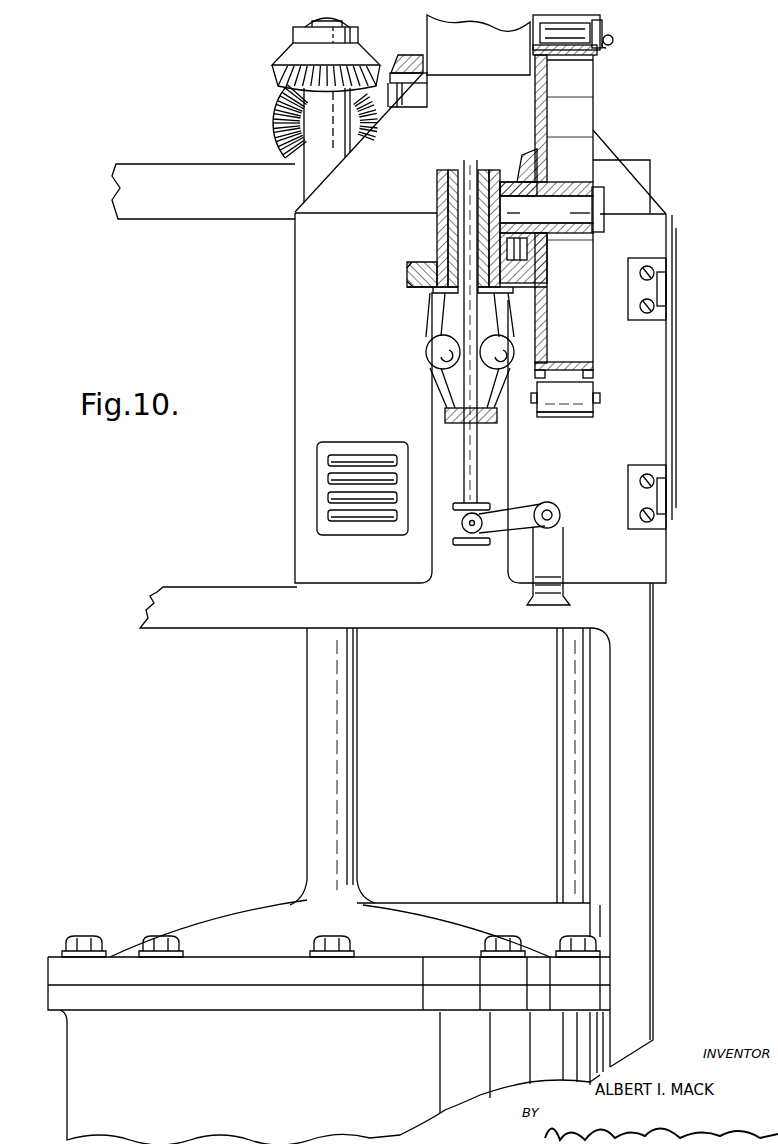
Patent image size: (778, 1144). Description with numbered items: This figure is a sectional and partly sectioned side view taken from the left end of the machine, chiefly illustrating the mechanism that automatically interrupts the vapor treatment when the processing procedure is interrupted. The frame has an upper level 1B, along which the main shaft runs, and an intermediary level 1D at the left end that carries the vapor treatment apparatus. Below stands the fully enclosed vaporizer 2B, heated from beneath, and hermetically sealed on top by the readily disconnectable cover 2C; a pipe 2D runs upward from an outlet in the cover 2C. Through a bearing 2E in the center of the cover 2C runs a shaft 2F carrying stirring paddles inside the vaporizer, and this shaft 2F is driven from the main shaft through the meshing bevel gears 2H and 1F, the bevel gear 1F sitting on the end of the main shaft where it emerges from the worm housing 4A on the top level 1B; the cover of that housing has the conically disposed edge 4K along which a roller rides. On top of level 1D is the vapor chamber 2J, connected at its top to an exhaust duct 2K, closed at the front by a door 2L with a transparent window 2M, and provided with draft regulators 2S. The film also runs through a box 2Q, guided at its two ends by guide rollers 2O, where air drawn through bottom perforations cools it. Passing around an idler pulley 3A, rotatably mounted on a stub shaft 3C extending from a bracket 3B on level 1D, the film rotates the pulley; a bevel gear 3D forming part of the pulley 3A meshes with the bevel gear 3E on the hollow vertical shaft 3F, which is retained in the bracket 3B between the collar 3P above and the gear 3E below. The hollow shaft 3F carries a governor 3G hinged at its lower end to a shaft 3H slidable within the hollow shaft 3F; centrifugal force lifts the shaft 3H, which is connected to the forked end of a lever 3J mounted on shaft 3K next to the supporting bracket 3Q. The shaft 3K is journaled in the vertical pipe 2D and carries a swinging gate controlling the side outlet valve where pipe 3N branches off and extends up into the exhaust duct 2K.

The upper level 1B is at (203, 191).
The intermediary level 1D is at (375, 827).
The bevel gear 1F is at (278, 111).
The vaporizer 2B is at (356, 863).
The cover 2C is at (329, 955).
The pipe 2D is at (573, 768).
The bearing 2E is at (332, 766).
The shaft 2F is at (308, 25).
The bevel gear 2H is at (293, 59).
The vapor chamber 2J is at (366, 398).
The exhaust duct 2K is at (478, 45).
The door 2L is at (666, 381).
The transparent window 2M is at (673, 413).
The guide rollers 2O is at (612, 44).
The box 2Q is at (601, 18).
The draft regulators 2S is at (367, 452).
The idler pulley 3A is at (594, 70).
The bracket 3B is at (510, 181).
The stub shaft 3C is at (566, 214).
The bevel gear 3D is at (527, 158).
The bevel gear 3E is at (421, 272).
The hollow vertical shaft 3F is at (438, 200).
The governor 3G is at (428, 350).
The shaft 3H is at (470, 163).
The lever 3J is at (529, 511).
The shaft 3K is at (560, 511).
The pipe 3N is at (582, 389).
The collar 3P is at (448, 172).
The supporting bracket 3Q is at (564, 552).
The worm housing 4A is at (402, 99).
The conically disposed edge 4K is at (411, 64).